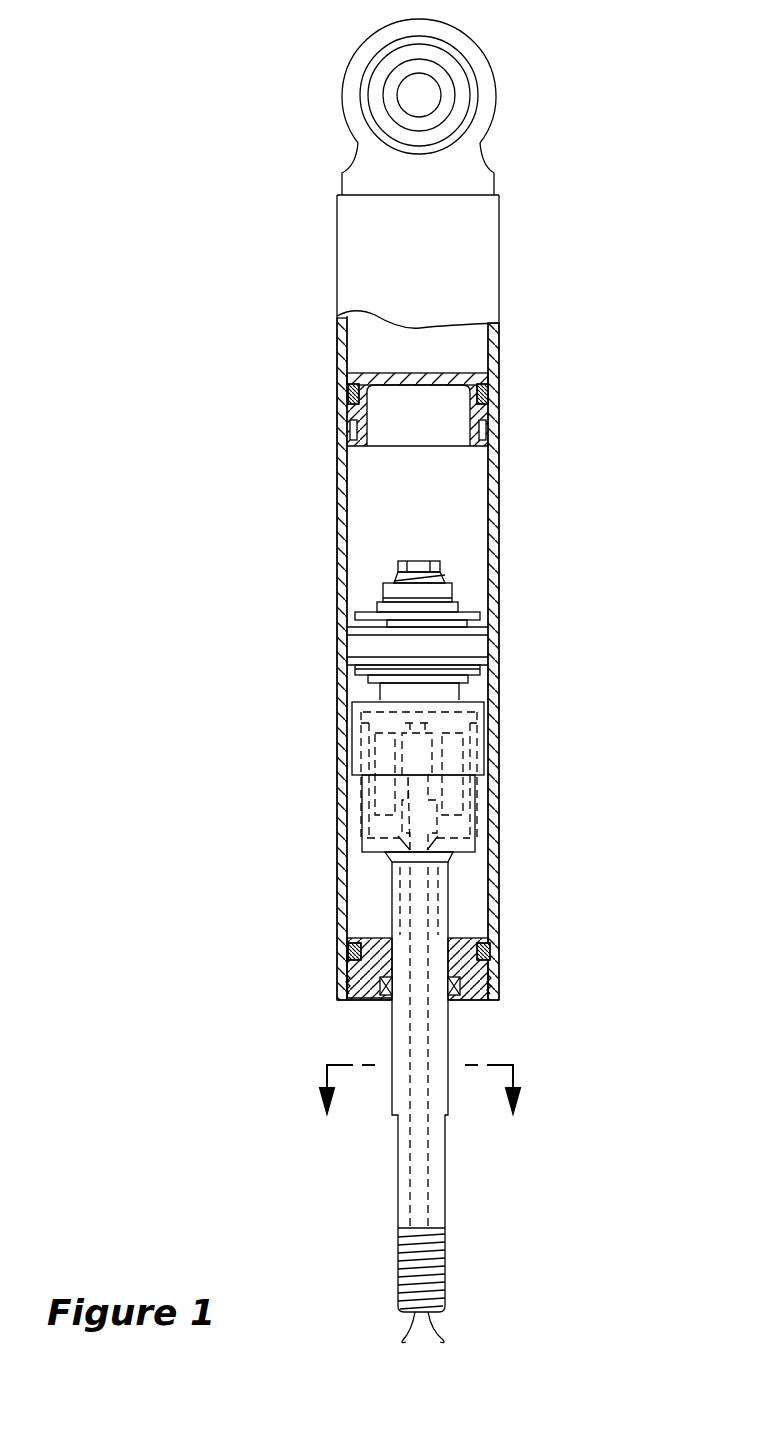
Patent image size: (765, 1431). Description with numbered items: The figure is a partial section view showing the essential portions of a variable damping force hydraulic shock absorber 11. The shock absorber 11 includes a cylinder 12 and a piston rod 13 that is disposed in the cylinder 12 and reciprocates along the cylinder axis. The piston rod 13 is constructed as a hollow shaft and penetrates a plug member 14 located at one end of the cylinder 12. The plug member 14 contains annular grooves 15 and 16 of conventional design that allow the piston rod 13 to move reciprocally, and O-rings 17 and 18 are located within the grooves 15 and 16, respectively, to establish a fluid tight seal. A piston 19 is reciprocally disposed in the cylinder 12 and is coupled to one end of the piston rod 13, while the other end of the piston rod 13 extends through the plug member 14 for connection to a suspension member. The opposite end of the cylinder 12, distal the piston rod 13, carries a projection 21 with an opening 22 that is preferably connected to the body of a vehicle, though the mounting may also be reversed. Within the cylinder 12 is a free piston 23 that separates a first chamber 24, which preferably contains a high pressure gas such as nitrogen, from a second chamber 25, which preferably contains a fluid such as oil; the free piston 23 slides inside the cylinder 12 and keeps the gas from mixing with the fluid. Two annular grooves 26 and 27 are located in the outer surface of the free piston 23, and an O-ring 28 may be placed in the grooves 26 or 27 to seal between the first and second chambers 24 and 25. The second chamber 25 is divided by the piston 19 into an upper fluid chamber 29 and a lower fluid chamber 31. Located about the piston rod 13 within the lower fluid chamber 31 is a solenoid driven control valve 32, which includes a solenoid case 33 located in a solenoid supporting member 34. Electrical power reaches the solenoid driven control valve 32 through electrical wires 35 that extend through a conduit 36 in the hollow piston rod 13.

The variable damping force hydraulic shock absorber 11 is at (257, 432).
The cylinder 12 is at (500, 560).
The piston rod 13 is at (445, 1175).
The plug member 14 is at (473, 998).
The annular groove 15 is at (495, 947).
The annular groove 16 is at (355, 1003).
The O-ring 17 is at (495, 965).
The O-ring 18 is at (387, 1003).
The piston 19 is at (478, 643).
The projection 21 is at (497, 102).
The opening 22 is at (418, 92).
The free piston 23 is at (467, 373).
The first chamber 24 is at (365, 345).
The second chamber 25 is at (363, 513).
The annular groove 26 is at (488, 395).
The annular groove 27 is at (490, 440).
The O-ring 28 is at (490, 407).
The upper fluid chamber 29 is at (368, 583).
The lower fluid chamber 31 is at (363, 694).
The solenoid driven control valve 32 is at (486, 789).
The solenoid case 33 is at (463, 825).
The solenoid supporting member 34 is at (467, 850).
The electrical wires 35 is at (440, 1327).
The conduit 36 is at (400, 1175).